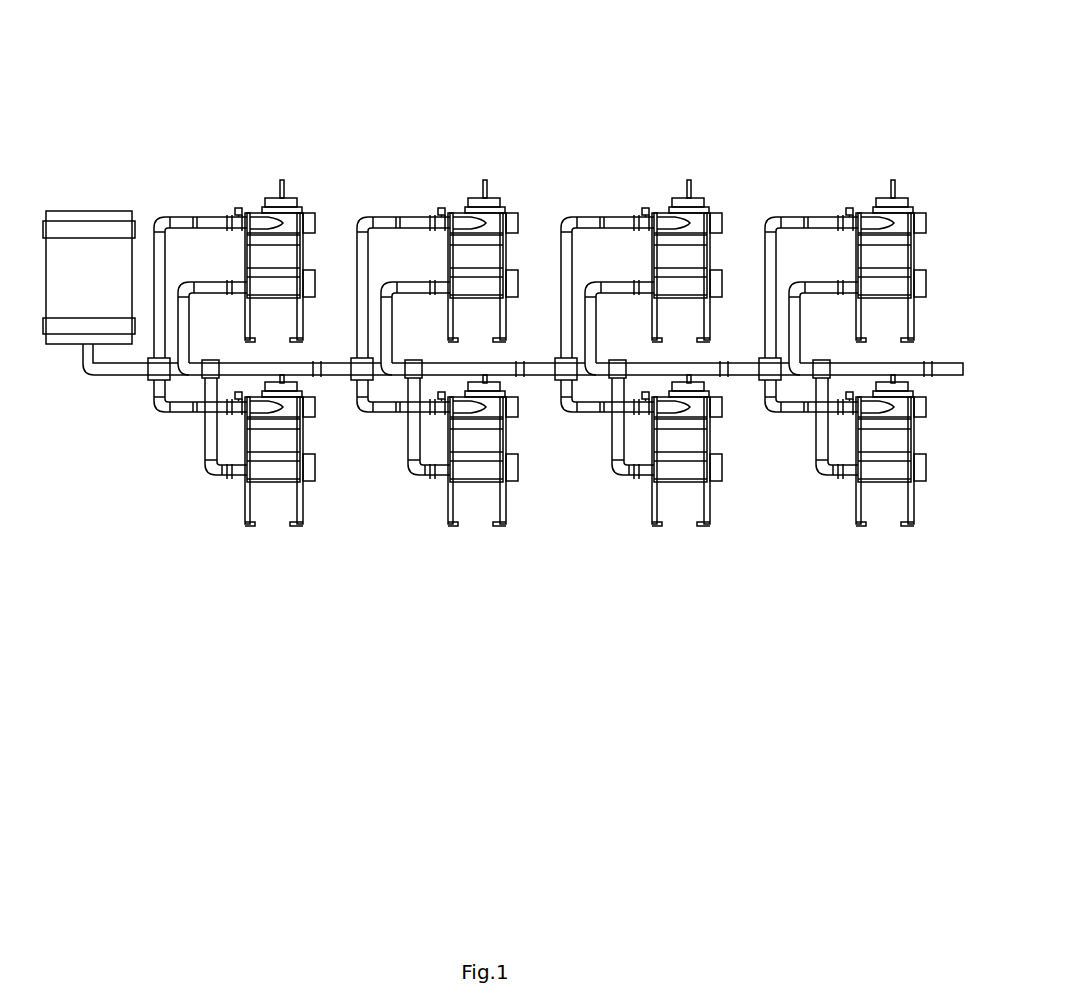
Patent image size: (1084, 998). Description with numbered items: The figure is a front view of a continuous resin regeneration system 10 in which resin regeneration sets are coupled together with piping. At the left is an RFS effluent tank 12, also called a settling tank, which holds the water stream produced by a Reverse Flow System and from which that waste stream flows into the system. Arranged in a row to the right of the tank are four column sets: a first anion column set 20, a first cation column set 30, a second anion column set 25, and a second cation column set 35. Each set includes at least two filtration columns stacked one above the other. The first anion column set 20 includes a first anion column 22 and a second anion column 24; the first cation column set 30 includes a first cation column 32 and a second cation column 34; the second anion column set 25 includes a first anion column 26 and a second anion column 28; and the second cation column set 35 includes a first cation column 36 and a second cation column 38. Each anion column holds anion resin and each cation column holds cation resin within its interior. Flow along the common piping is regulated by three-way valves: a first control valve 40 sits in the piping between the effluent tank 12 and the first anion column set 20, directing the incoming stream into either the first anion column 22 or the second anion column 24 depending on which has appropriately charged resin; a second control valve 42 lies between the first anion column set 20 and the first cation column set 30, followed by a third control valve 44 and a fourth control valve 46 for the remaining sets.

The continuous resin regeneration system 10 is at (239, 74).
The RFS effluent tank 12 is at (102, 260).
The first anion column set 20 is at (165, 456).
The first anion column 22 is at (309, 218).
The second anion column 24 is at (288, 463).
The second anion column set 25 is at (644, 590).
The first anion column 26 is at (690, 257).
The second anion column 28 is at (685, 442).
The first cation column set 30 is at (427, 585).
The first cation column 32 is at (522, 223).
The second cation column 34 is at (488, 461).
The second cation column set 35 is at (797, 444).
The first cation column 36 is at (893, 239).
The second cation column 38 is at (890, 485).
The first control valve 40 is at (157, 370).
The second control valve 42 is at (356, 414).
The third control valve 44 is at (560, 414).
The fourth control valve 46 is at (757, 412).